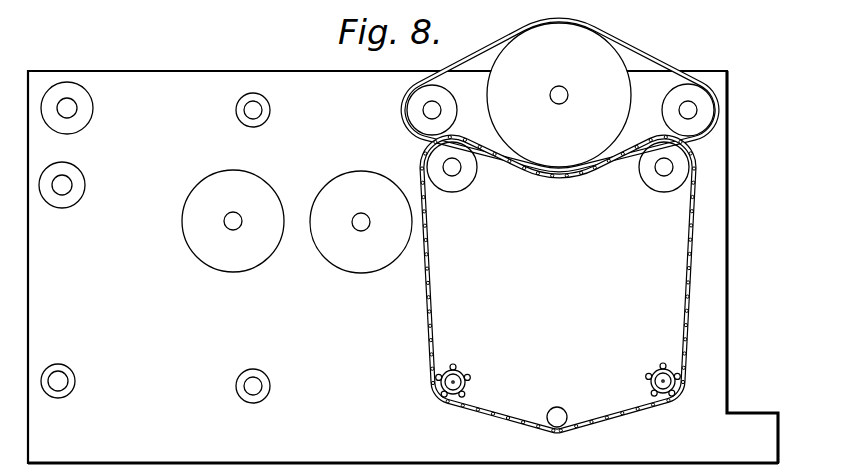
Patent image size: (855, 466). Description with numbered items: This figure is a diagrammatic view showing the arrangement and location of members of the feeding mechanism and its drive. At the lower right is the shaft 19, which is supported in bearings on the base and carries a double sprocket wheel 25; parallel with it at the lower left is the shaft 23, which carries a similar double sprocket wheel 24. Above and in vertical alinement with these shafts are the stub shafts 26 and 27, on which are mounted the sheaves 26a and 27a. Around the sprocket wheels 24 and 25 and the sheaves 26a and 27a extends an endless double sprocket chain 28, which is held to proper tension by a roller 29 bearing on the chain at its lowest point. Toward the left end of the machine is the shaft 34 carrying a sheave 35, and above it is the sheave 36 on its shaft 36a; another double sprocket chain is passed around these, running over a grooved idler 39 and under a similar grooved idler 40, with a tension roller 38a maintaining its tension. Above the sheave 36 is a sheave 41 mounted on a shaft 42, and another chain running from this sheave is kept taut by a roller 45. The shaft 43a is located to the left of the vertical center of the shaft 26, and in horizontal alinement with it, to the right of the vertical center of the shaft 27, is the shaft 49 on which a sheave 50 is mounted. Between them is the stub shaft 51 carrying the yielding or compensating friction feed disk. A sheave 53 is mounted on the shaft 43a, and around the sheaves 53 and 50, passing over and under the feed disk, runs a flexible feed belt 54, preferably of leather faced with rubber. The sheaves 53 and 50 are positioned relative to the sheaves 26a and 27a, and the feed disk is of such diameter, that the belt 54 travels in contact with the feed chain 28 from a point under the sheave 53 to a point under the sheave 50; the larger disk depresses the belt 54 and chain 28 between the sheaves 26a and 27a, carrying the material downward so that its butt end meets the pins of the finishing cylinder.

The shaft 19 is at (663, 392).
The shaft 23 is at (451, 389).
The double sprocket wheel 24 is at (463, 377).
The double sprocket wheel 25 is at (660, 374).
The stub shaft 26 is at (452, 172).
The sheave 26a is at (473, 178).
The stub shaft 27 is at (662, 172).
The sheave 27a is at (645, 177).
The endless double sprocket chain 28 is at (565, 179).
The roller 29 is at (559, 414).
The shaft 34 is at (64, 378).
The sheave 35 is at (76, 383).
The sheave 36 is at (82, 186).
The shaft 36a is at (64, 191).
The tension roller 38a is at (250, 402).
The grooved idler 39 is at (216, 256).
The grooved idler 40 is at (349, 262).
The sheave 41 is at (84, 119).
The shaft 42 is at (72, 106).
The shaft 43a is at (432, 111).
The roller 45 is at (241, 106).
The shaft 49 is at (690, 114).
The sheave 50 is at (700, 100).
The stub shaft 51 is at (562, 92).
The sheave 53 is at (441, 101).
The flexible feed belt 54 is at (498, 43).